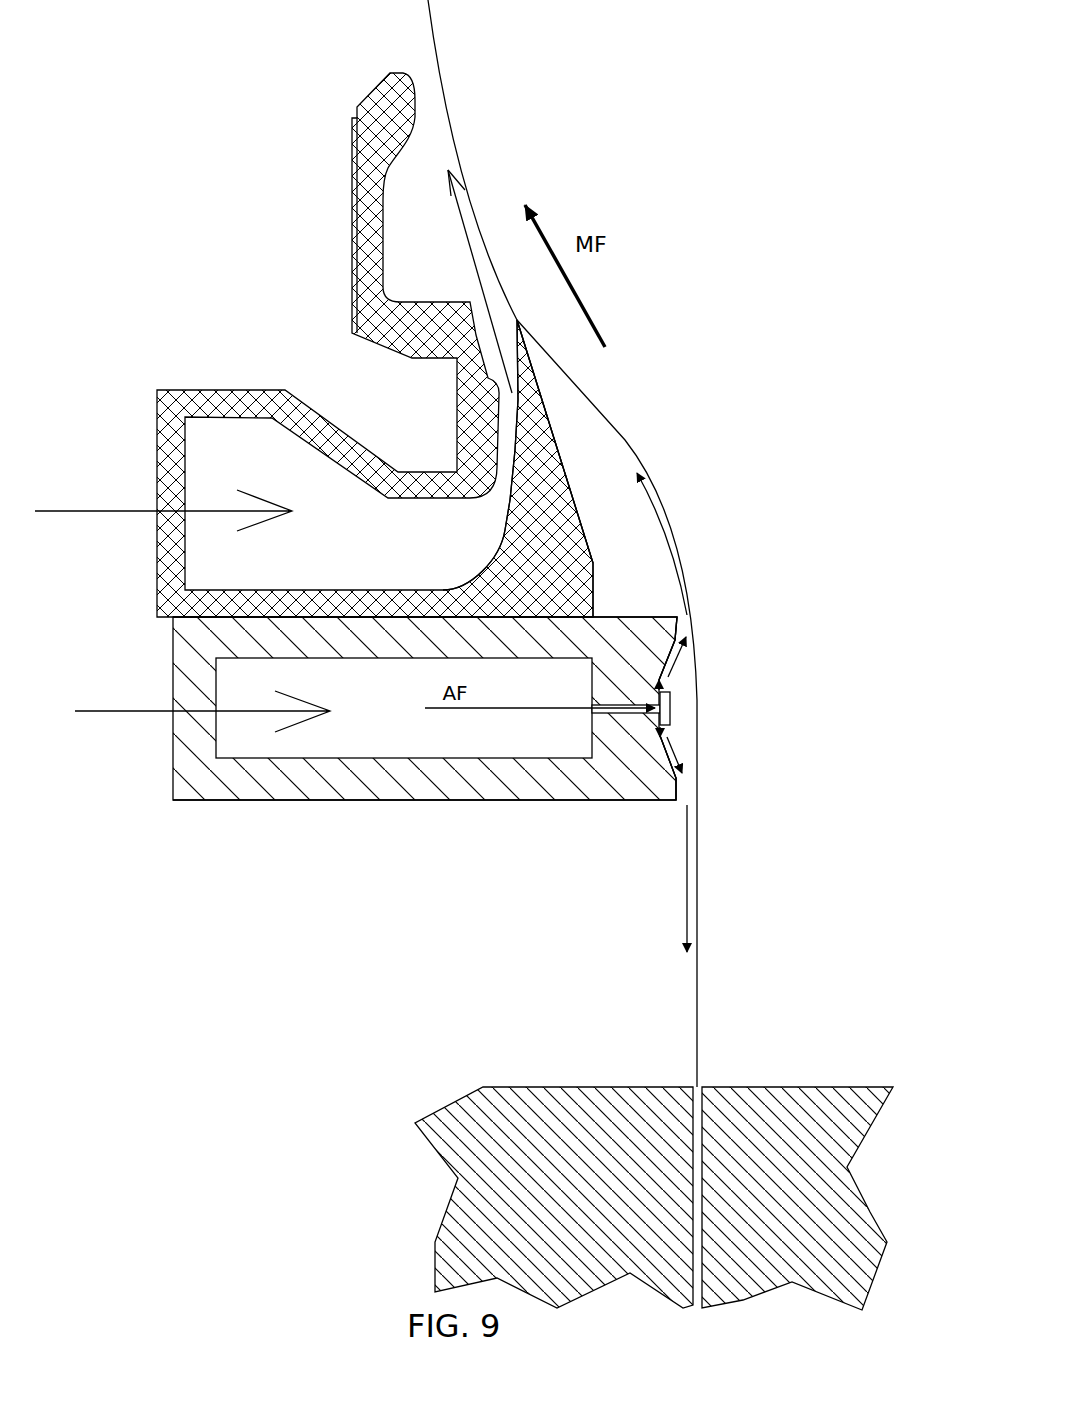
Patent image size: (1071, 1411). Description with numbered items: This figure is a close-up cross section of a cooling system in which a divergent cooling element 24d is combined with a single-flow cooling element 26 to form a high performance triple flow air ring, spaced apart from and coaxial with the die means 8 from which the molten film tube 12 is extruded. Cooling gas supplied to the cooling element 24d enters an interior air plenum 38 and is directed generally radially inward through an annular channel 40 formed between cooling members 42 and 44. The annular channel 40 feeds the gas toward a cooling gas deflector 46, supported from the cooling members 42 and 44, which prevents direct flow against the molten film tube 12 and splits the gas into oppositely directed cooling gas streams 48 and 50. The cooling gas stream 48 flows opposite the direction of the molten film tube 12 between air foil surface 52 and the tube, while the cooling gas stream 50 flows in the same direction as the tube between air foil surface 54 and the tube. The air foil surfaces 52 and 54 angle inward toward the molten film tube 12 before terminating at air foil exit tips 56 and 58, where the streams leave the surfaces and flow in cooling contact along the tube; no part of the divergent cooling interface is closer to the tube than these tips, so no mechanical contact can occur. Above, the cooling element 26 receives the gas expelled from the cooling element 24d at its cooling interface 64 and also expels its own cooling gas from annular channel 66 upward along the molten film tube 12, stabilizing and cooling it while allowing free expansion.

The die means 8 is at (462, 1265).
The molten film tube 12 is at (635, 455).
The cooling element 24d is at (332, 790).
The cooling element 26 is at (218, 405).
The interior air plenum 38 is at (333, 708).
The annular channel 40 is at (625, 705).
The cooling member 42 is at (485, 783).
The cooling member 44 is at (600, 637).
The cooling gas deflector 46 is at (670, 710).
The cooling gas stream 48 is at (685, 875).
The cooling gas stream 50 is at (657, 515).
The air foil surface 52 is at (677, 778).
The air foil surface 54 is at (685, 632).
The air foil exit tip 56 is at (676, 798).
The air foil exit tip 58 is at (682, 632).
The cooling interface 64 is at (563, 460).
The annular channel 66 is at (502, 452).